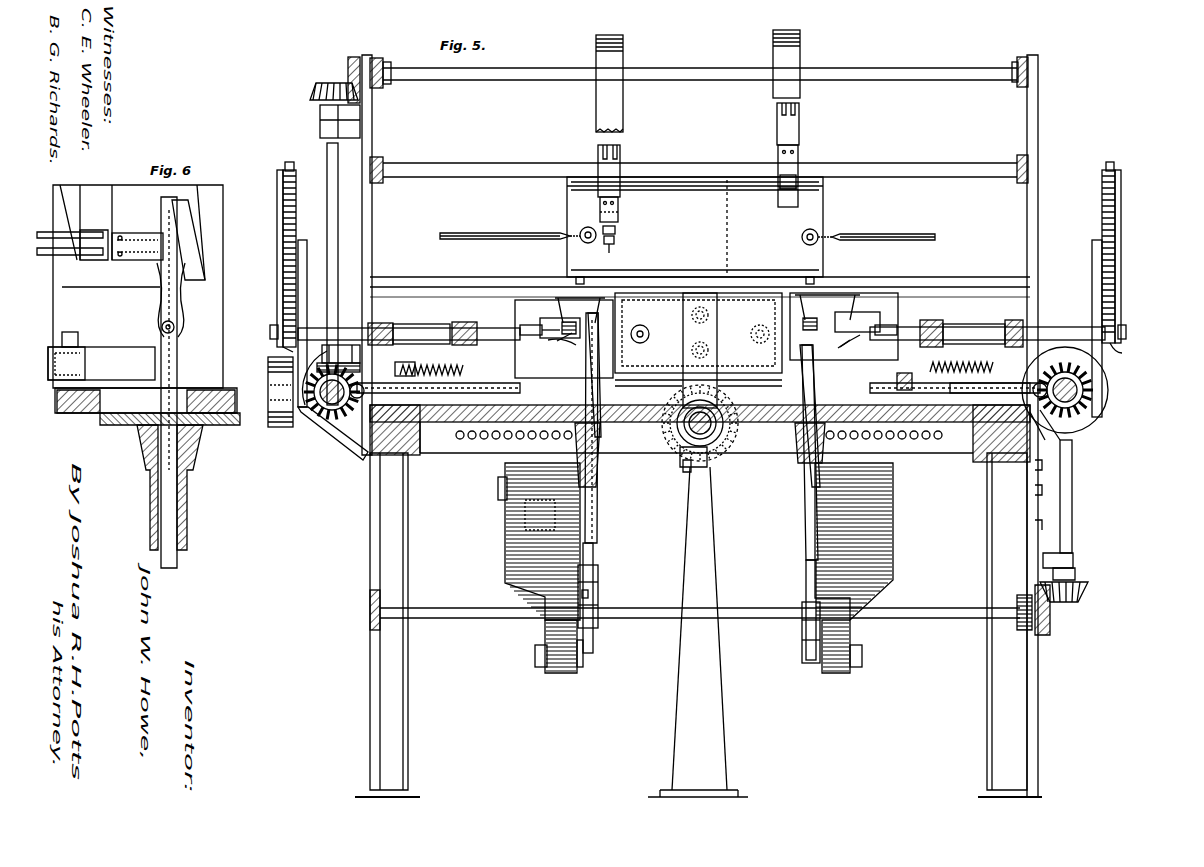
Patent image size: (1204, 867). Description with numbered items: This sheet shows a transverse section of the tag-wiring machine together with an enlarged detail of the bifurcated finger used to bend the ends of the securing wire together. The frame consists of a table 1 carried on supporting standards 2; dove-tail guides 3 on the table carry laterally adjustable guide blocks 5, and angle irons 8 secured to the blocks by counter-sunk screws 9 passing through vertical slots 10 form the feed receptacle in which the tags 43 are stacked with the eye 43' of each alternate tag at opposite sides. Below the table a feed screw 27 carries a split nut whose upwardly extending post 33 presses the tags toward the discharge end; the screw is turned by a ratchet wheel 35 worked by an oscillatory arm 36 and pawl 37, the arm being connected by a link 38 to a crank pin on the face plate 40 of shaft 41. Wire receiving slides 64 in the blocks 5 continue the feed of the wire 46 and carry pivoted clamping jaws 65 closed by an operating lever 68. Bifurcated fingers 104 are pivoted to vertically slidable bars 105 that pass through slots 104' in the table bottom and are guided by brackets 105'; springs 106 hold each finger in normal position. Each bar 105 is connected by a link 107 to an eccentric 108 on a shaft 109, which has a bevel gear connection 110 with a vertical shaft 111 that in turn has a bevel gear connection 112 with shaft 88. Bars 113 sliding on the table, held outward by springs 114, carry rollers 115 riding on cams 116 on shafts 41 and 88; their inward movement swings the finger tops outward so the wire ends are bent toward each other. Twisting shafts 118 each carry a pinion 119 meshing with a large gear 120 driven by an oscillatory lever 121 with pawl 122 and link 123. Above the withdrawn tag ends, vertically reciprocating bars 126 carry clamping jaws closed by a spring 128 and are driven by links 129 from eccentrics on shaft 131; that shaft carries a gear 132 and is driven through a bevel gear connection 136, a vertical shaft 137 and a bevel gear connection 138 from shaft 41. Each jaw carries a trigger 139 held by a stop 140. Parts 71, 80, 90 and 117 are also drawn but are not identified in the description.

In FIG. 5, the table 1 is at (468, 420).
In FIG. 5, the supporting standards 2 is at (395, 524).
In FIG. 5, the dove tail guides 3 is at (455, 398).
In FIG. 5, the guide blocks 5 is at (522, 312).
In FIG. 5, the angle irons 8 is at (698, 390).
In FIG. 5, the counter-sunk screws 9 is at (680, 365).
In FIG. 5, the vertical slots 10 is at (690, 352).
In FIG. 5, the feed screw 27 is at (672, 440).
In FIG. 5, the arm or post 33 is at (700, 412).
In FIG. 5, the ratchet wheel 35 is at (742, 446).
In FIG. 5, the oscillatory arm 36 is at (712, 473).
In FIG. 5, the pawl 37 is at (688, 470).
In FIG. 5, the link 38 is at (905, 372).
In FIG. 5, the face plate 40 is at (1079, 443).
In FIG. 5, the shaft 41 is at (335, 398).
In FIG. 5, the tags 43 is at (695, 230).
In FIG. 5, the eye 43' is at (695, 274).
In FIG. 5, the wire 46 is at (500, 240).
In FIG. 5, the wire receiving slides 64 is at (707, 301).
In FIG. 5, the clamping jaws 65 is at (690, 318).
In FIG. 5, the operating lever 68 is at (713, 344).
In FIG. 5, the block 71 is at (540, 322).
In FIG. 5, the hopper 80 is at (515, 539).
In FIG. 5, the shaft 88 is at (1071, 410).
In FIG. 5, the gear 90 is at (273, 374).
In FIG. 6, the bifurcated fingers 104 is at (211, 232).
In FIG. 5, the bifurcated fingers 104 is at (669, 400).
In FIG. 6, the slots 104' is at (120, 481).
In FIG. 5, the slots 104' is at (700, 350).
In FIG. 6, the vertically slidable bars 105 is at (187, 382).
In FIG. 5, the vertically slidable bars 105 is at (701, 436).
In FIG. 6, the brackets 105' is at (205, 487).
In FIG. 5, the brackets 105' is at (700, 455).
In FIG. 6, the springs 106 is at (160, 298).
In FIG. 5, the link 107 is at (594, 525).
In FIG. 5, the eccentric 108 is at (598, 577).
In FIG. 5, the shaft 109 is at (640, 610).
In FIG. 5, the bevel gear connection 110 is at (1049, 614).
In FIG. 5, the vertical shaft 111 is at (1068, 520).
In FIG. 5, the bevel gear connection 112 is at (1095, 370).
In FIG. 6, the bars 113 is at (101, 356).
In FIG. 5, the bars 113 is at (798, 288).
In FIG. 5, the springs 114 is at (968, 358).
In FIG. 5, the rollers 115 is at (1040, 383).
In FIG. 5, the cams 116 is at (325, 420).
In FIG. 5, the lever 117 is at (540, 340).
In FIG. 5, the shafts 118 is at (365, 330).
In FIG. 5, the pinion 119 is at (283, 347).
In FIG. 5, the large gear 120 is at (290, 215).
In FIG. 5, the oscillatory lever 121 is at (280, 228).
In FIG. 5, the pawl 122 is at (292, 184).
In FIG. 5, the link 123 is at (270, 330).
In FIG. 5, the vertically reciprocating bar 126 is at (621, 160).
In FIG. 5, the spring 128 is at (618, 209).
In FIG. 5, the link 129 is at (623, 116).
In FIG. 5, the shaft 131 is at (490, 75).
In FIG. 5, the gear 132 is at (388, 86).
In FIG. 5, the bevel gear connection 136 is at (348, 67).
In FIG. 5, the vertical shaft 137 is at (338, 250).
In FIG. 5, the bevel gear connection 138 is at (360, 367).
In FIG. 5, the trigger 139 is at (615, 241).
In FIG. 5, the stop 140 is at (616, 230).